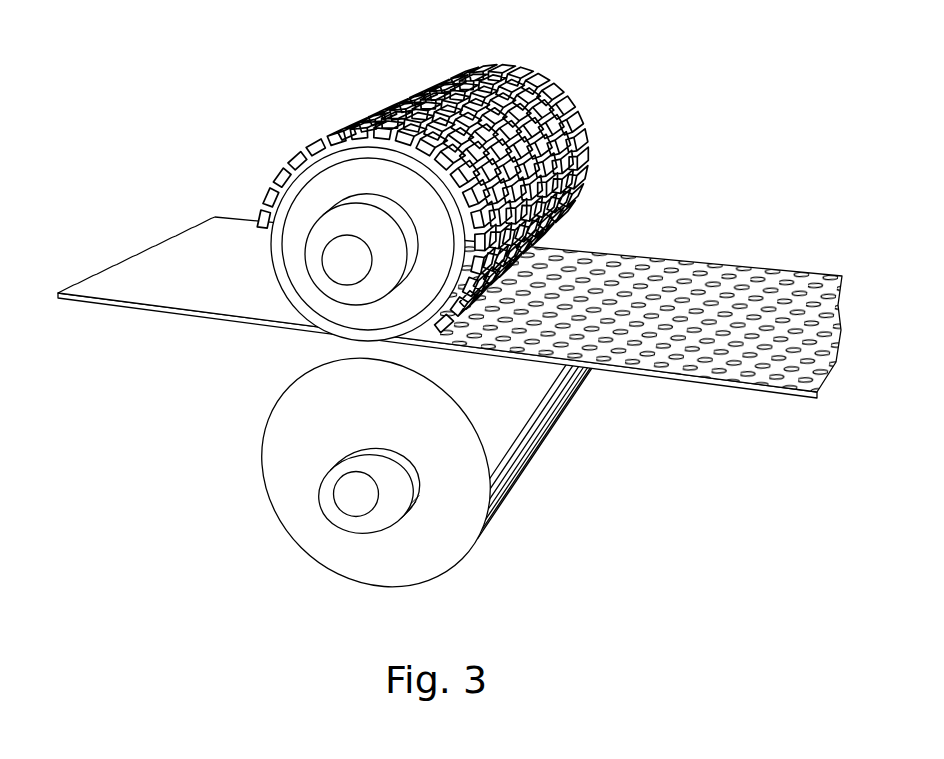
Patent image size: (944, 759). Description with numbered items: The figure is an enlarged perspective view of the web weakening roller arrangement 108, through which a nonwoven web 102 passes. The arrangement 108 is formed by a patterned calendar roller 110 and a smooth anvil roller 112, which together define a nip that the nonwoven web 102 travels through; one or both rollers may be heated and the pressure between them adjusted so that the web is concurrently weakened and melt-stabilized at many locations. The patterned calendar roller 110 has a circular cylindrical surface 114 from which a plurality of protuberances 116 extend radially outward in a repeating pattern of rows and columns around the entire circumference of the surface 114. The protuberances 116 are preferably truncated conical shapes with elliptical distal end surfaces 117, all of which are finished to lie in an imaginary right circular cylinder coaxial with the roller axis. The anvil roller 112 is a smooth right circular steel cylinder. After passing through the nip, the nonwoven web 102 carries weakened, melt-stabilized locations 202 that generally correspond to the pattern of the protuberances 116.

The nonwoven web 102 is at (450, 292).
The web weakening roller arrangement 108 is at (450, 327).
The patterned calendar roller 110 is at (436, 195).
The smooth anvil roller 112 is at (279, 441).
The circular cylindrical surface 114 is at (362, 136).
The protuberances 116 is at (279, 178).
The distal end surfaces 117 is at (408, 128).
The weakened, melt-stabilized locations 202 is at (618, 268).